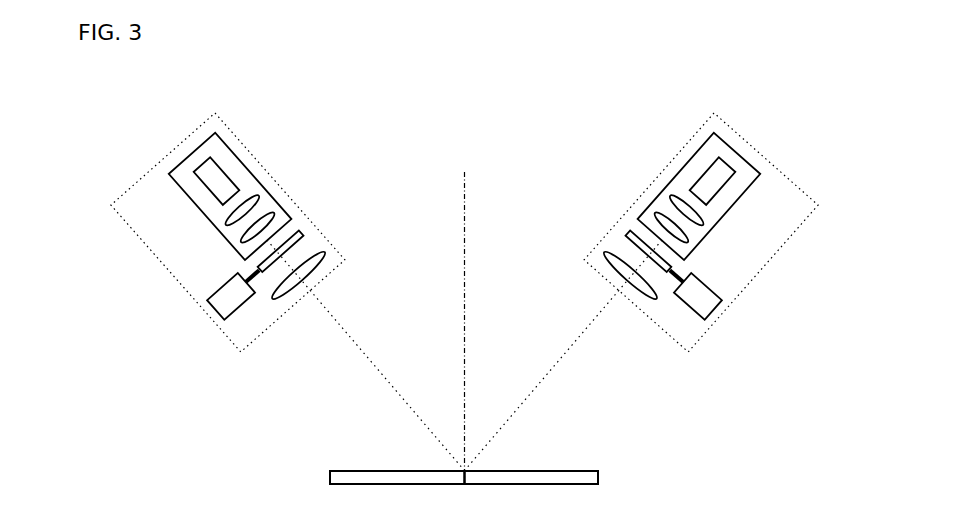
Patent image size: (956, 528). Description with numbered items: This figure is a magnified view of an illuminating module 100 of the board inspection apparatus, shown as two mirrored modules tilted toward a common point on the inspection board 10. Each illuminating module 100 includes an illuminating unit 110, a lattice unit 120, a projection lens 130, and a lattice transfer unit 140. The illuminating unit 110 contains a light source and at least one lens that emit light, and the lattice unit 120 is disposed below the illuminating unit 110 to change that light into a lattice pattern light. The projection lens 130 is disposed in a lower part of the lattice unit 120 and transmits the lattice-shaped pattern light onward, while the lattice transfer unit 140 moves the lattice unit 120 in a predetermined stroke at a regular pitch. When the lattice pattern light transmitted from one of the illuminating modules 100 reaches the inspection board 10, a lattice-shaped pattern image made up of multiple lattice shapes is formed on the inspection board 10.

The inspection board 10 is at (547, 477).
The illuminating module 100 is at (212, 328).
The illuminating unit 110 is at (240, 163).
The lattice unit 120 is at (300, 223).
The projection lens 130 is at (283, 297).
The lattice transfer unit 140 is at (237, 310).